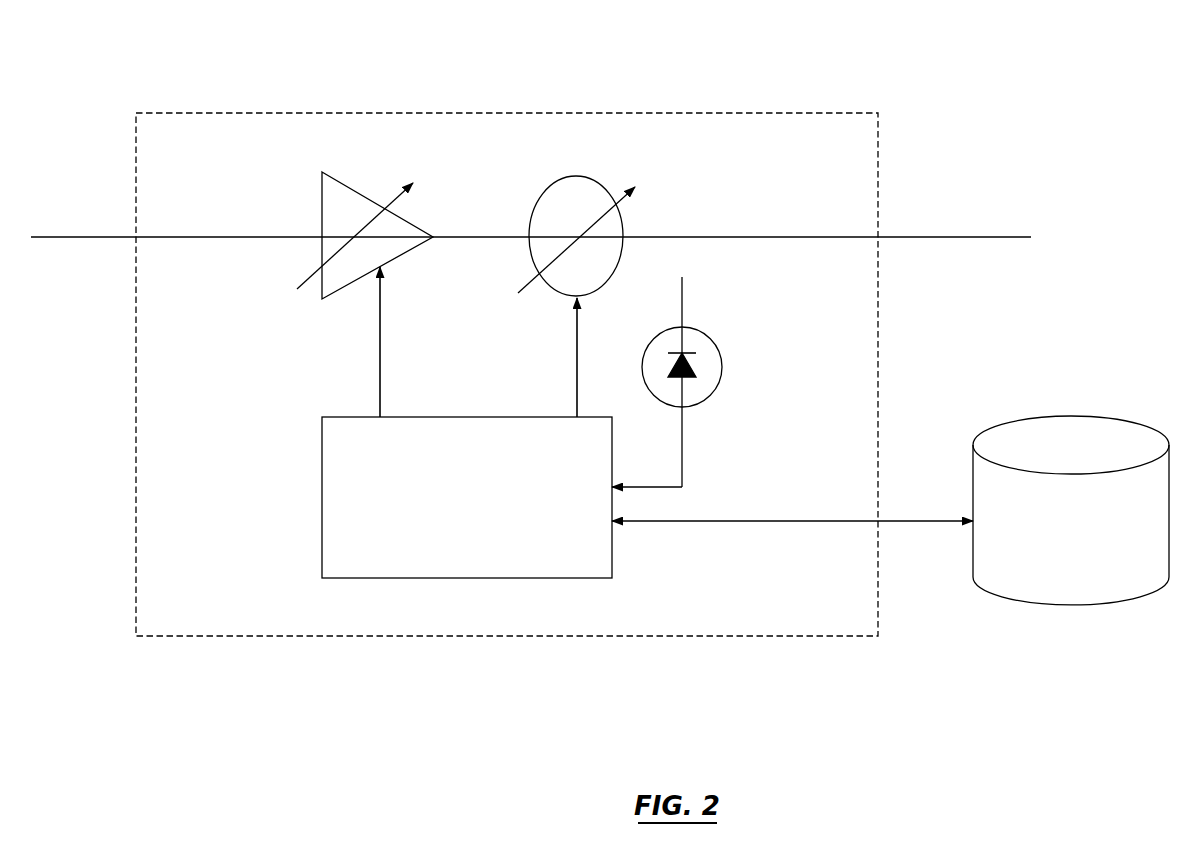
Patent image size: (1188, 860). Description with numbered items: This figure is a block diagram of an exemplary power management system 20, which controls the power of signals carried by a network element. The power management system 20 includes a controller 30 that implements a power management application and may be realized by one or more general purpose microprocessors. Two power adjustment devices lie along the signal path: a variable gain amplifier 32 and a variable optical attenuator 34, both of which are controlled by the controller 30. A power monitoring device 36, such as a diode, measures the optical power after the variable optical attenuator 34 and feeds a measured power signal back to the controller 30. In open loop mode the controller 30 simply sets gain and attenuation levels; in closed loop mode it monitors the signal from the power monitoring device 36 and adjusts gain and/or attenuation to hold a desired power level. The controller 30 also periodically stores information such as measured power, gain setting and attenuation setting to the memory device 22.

The power management system 20 is at (277, 113).
The memory device 22 is at (1075, 412).
The controller 30 is at (473, 579).
The variable gain amplifier 32 is at (368, 193).
The variable optical attenuator 34 is at (577, 175).
The power monitoring device 36 is at (703, 328).